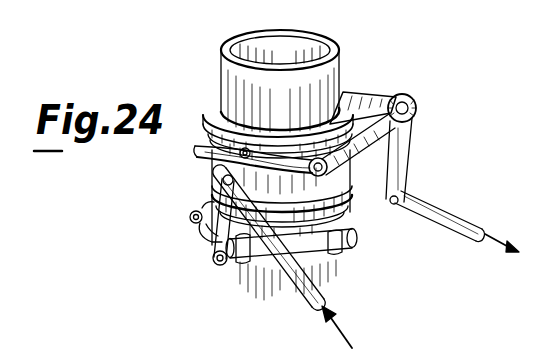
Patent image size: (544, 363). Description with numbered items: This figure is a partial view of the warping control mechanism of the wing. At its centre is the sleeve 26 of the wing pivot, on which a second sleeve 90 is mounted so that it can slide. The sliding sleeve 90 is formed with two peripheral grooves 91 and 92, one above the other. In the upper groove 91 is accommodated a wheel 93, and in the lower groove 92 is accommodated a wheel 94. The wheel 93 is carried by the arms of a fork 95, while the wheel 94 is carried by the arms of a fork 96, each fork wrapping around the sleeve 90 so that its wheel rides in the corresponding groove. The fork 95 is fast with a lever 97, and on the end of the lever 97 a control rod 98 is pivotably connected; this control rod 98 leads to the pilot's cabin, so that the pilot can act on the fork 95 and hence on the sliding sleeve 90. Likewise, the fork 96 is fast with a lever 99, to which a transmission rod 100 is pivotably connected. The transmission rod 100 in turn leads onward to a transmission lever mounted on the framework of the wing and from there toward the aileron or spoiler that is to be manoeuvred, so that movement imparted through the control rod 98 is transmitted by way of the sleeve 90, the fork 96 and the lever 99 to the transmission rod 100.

The sleeve 26 is at (340, 80).
The wheel 93 is at (216, 138).
The fork arm 95 is at (272, 137).
The peripheral groove 91 is at (200, 156).
The fork arm 96 is at (350, 220).
The lever 97 is at (412, 152).
The control rod 98 is at (450, 222).
The sleeve 90 is at (346, 208).
The peripheral groove 92 is at (340, 273).
The wheel 94 is at (212, 202).
The lever 99 is at (222, 240).
The transmission rod 100 is at (282, 275).